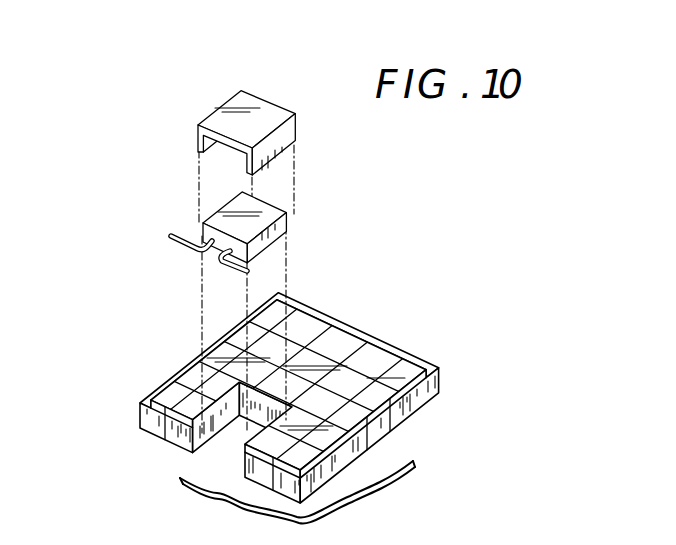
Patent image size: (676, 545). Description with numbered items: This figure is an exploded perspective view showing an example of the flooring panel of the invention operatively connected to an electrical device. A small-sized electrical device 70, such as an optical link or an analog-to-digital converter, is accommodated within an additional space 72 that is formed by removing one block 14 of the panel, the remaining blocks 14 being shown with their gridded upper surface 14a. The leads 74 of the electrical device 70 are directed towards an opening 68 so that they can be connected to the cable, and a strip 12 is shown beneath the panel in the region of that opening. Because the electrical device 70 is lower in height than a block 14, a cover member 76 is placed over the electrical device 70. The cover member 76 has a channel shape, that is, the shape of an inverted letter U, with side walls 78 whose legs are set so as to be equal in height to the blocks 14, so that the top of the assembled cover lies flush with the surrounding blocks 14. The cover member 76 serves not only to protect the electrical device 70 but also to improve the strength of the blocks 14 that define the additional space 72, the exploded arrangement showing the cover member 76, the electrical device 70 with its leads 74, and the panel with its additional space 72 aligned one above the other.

The flexible strip / tape 12 is at (228, 496).
The block 14 is at (177, 440).
The heat sink base with grid surface 14a is at (375, 334).
The opening 68 is at (223, 454).
The electrical device 70 is at (273, 231).
The additional space 72 is at (230, 409).
The leads 74 is at (187, 251).
The cover member 76 is at (269, 112).
The cap side wall 78 is at (278, 148).